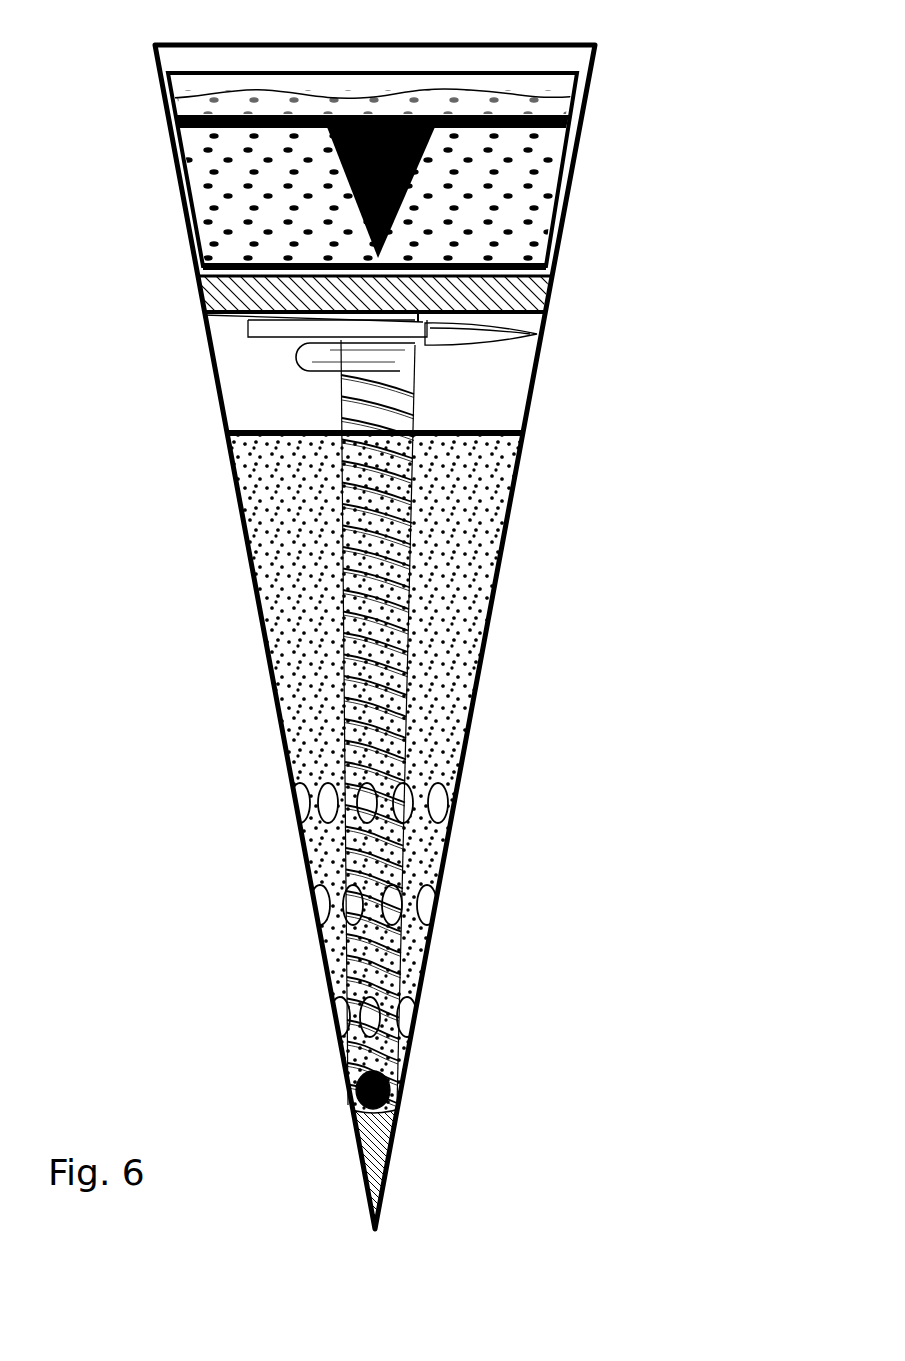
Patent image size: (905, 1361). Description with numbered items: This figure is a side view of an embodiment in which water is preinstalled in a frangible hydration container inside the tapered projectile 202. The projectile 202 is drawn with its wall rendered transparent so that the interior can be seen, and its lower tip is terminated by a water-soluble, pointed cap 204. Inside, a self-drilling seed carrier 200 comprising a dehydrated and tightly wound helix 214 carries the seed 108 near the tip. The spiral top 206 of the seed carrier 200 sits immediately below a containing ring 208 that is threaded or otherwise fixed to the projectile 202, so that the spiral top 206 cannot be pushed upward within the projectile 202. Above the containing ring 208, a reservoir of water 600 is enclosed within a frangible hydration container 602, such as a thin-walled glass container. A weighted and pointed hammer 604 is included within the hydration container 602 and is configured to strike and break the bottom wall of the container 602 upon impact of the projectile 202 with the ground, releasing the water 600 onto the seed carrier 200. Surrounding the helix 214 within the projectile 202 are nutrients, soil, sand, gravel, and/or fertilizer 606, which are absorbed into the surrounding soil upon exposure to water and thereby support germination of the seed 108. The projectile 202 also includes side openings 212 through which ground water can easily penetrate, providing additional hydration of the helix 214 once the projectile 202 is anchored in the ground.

The self-drilling seed carrier 200 is at (330, 405).
The tapered projectile 202 is at (588, 98).
The water-soluble pointed cap 204 is at (387, 1157).
The spiral top 206 is at (543, 325).
The containing ring 208 is at (548, 297).
The side openings 212 is at (440, 803).
The helix 214 is at (418, 397).
The seed 108 is at (392, 1090).
The reservoir of water 600 is at (308, 214).
The frangible hydration container 602 is at (552, 205).
The hammer 604 is at (400, 167).
The fertilizer 606 is at (306, 501).